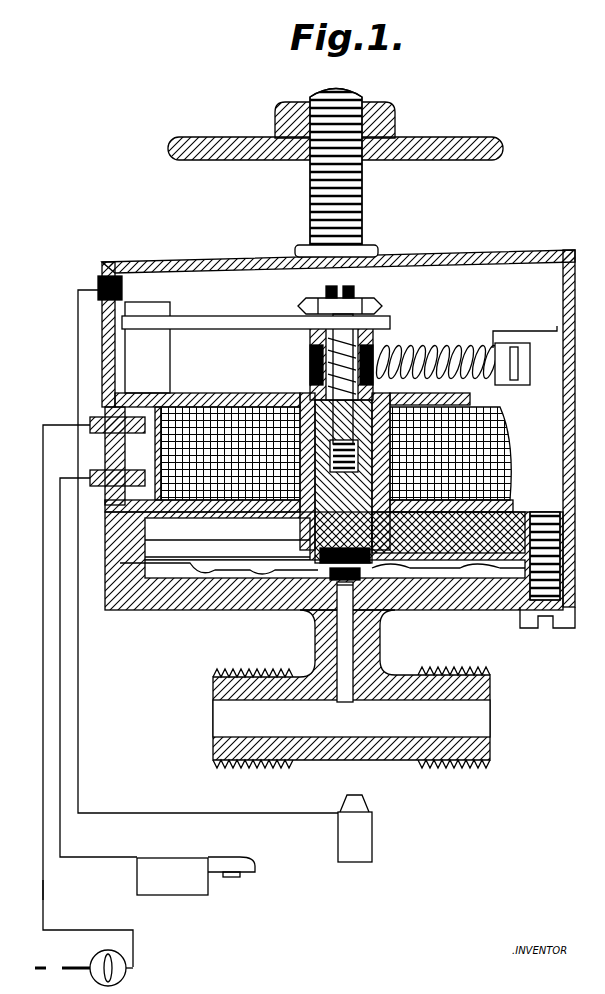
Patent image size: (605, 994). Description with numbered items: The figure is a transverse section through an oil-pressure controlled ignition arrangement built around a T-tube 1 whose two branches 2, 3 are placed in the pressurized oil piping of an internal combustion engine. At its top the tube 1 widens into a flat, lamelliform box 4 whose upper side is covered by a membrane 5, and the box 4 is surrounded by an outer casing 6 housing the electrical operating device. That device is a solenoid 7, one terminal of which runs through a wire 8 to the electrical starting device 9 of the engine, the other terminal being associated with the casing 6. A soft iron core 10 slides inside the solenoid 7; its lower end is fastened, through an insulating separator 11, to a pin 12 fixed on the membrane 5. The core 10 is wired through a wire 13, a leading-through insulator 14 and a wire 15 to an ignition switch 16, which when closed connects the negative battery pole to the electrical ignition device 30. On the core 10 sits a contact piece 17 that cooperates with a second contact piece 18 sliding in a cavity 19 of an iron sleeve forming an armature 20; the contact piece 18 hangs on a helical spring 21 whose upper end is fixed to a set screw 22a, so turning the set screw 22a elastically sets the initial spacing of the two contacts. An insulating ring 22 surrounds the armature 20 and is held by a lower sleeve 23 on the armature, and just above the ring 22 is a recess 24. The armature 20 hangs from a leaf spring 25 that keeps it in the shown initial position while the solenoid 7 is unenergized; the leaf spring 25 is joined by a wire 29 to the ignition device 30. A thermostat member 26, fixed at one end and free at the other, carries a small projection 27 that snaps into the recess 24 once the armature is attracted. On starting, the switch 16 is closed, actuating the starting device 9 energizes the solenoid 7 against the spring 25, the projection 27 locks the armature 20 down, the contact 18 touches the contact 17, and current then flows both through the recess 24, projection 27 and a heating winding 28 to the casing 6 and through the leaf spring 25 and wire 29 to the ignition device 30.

The T-tube 1 is at (378, 664).
The branch 2 is at (222, 718).
The branch 3 is at (478, 712).
The lamelliform box 4 is at (205, 612).
The membrane 5 is at (276, 578).
The outer casing 6 is at (497, 256).
The solenoid 7 is at (201, 415).
The wire 8 is at (60, 426).
The electrical starting device 9 is at (188, 896).
The soft iron core 10 is at (468, 606).
The insulating separator 11 is at (362, 585).
The pin 12 is at (327, 596).
The wire 13 is at (228, 552).
The leading-through insulator 14 is at (95, 434).
The wire 15 is at (45, 890).
The ignition switch 16 is at (122, 978).
The contact piece 17 is at (315, 462).
The contact piece 18 is at (488, 413).
The cavity 19 is at (470, 402).
The armature 20 is at (302, 335).
The helical spring 21 is at (310, 360).
The insulating ring 22 is at (310, 350).
The set screw 22a is at (355, 292).
The lower sleeve 23 is at (314, 386).
The recess 24 is at (372, 345).
The leaf spring 25 is at (195, 318).
The coil spring 26 is at (492, 345).
The projection 27 is at (375, 352).
The heating winding 28 is at (468, 332).
The wire 29 is at (98, 288).
The electrical ignition device 30 is at (360, 832).